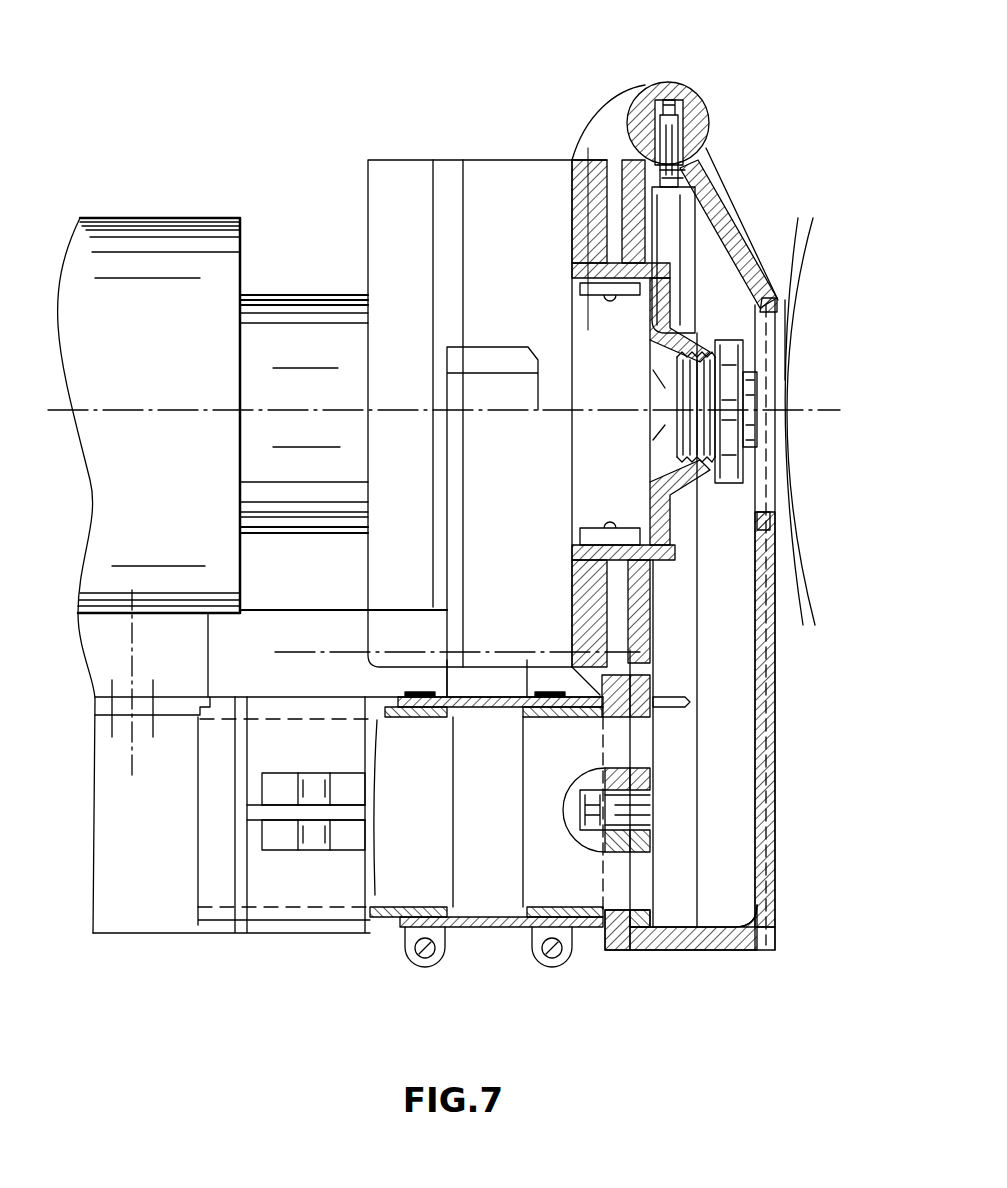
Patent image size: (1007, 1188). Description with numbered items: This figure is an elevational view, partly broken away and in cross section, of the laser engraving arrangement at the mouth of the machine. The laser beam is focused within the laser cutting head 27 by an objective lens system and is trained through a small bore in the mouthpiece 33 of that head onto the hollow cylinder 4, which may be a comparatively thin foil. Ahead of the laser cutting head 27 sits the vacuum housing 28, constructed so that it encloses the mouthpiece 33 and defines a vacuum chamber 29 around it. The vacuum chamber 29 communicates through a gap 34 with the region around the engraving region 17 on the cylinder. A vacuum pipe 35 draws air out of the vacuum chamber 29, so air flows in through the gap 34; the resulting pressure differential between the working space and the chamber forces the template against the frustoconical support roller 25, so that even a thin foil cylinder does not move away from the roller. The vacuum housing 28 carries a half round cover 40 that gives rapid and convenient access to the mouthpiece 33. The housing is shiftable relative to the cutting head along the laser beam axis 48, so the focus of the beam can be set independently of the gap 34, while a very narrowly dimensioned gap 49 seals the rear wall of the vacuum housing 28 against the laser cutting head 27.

The hollow cylinder 4 is at (800, 243).
The engraving region 17 is at (787, 390).
The frustoconical support roller 25 is at (722, 198).
The laser cutting head 27 is at (530, 190).
The vacuum housing 28 is at (743, 247).
The vacuum chamber 29 is at (755, 680).
The mouthpiece 33 is at (733, 452).
The gap 34 is at (787, 297).
The vacuum pipe 35 is at (493, 890).
The half round cover 40 is at (708, 160).
The laser beam axis 48 is at (177, 410).
The gap 49 is at (657, 587).